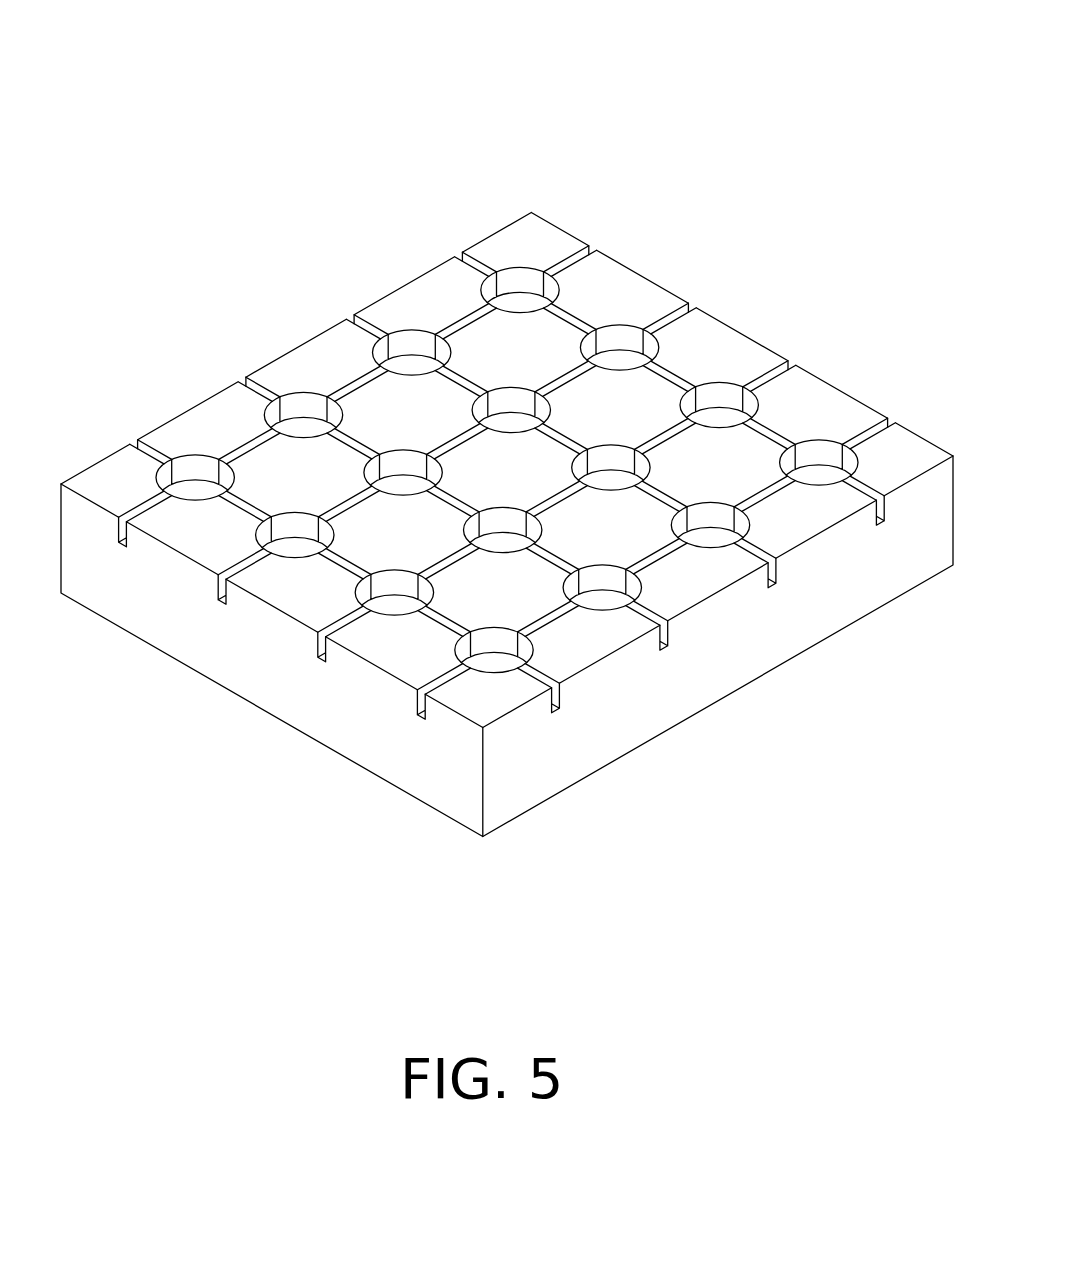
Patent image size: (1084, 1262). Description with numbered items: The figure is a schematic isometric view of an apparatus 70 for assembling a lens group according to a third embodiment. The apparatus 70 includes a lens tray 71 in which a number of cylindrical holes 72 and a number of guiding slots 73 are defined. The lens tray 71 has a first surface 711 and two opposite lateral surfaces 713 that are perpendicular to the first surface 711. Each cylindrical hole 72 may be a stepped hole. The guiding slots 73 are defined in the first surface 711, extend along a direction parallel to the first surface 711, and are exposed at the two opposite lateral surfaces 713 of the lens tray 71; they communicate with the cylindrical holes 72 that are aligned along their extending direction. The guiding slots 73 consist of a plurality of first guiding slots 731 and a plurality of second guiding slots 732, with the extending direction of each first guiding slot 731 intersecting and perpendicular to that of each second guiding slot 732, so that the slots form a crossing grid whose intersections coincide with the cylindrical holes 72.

The apparatus for assembling a lens group 70 is at (500, 58).
The lens tray 71 is at (830, 575).
The first surface 711 is at (575, 640).
The lateral surfaces 713 is at (340, 715).
The cylindrical hole 72 is at (522, 278).
The guiding slots 73 is at (758, 118).
The first guiding slots 731 is at (562, 258).
The second guiding slots 732 is at (565, 310).